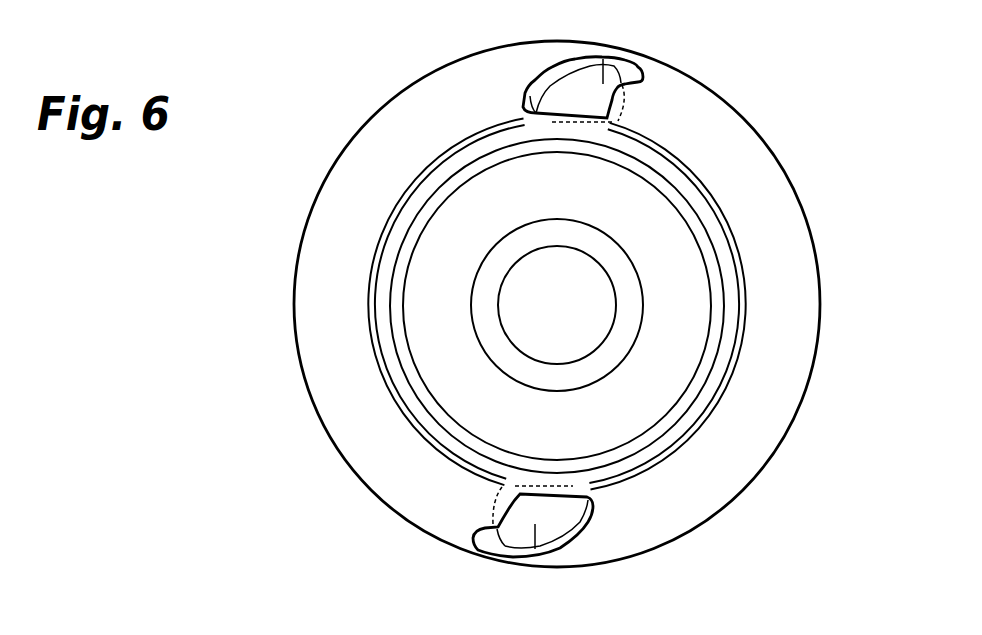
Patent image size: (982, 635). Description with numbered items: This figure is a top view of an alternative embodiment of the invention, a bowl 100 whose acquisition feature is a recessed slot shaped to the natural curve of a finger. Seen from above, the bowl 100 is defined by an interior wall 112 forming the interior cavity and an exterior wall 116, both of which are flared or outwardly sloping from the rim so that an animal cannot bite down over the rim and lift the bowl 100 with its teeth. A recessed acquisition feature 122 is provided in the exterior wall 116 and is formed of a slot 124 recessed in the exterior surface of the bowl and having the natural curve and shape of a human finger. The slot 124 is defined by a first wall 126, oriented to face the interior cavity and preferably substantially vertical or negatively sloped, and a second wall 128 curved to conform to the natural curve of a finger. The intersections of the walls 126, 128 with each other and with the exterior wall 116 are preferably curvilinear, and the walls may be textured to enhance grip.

The bowl 100 is at (839, 185).
The interior wall 112 is at (573, 197).
The exterior wall 116 is at (821, 300).
The acquisition feature 122 is at (555, 517).
The slot 124 is at (482, 540).
The first wall 126 is at (592, 80).
The second wall 128 is at (603, 112).